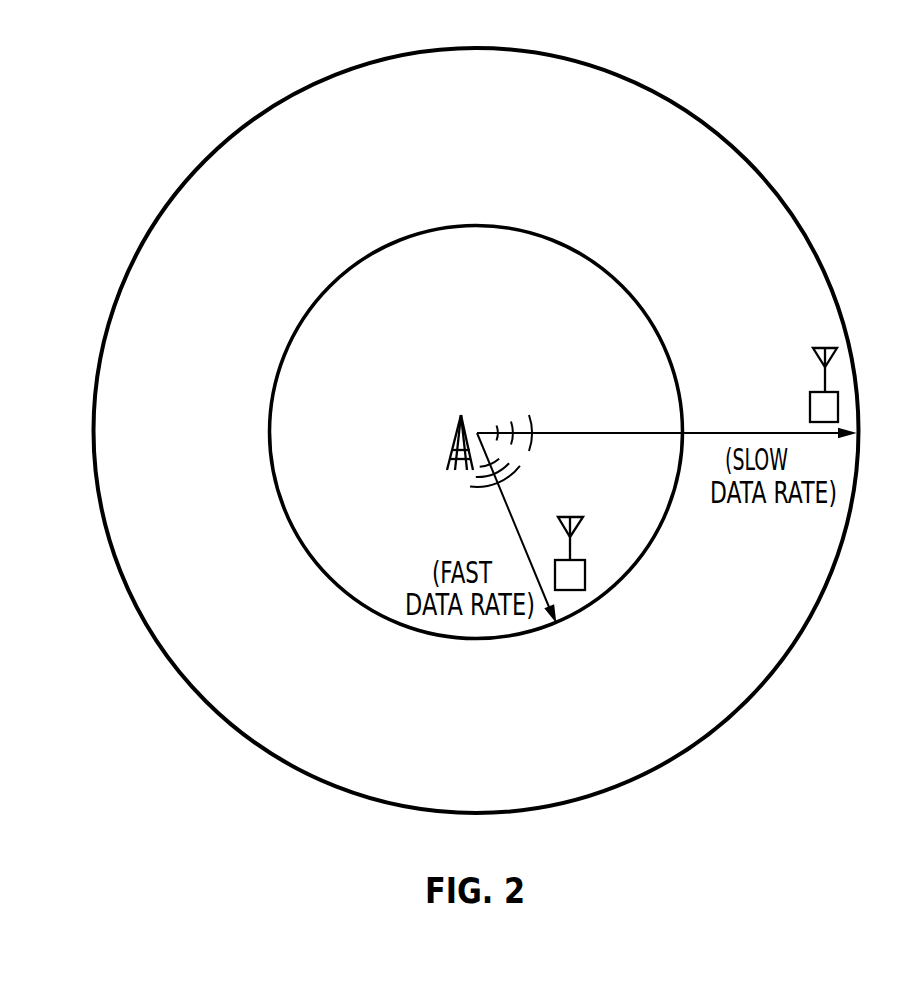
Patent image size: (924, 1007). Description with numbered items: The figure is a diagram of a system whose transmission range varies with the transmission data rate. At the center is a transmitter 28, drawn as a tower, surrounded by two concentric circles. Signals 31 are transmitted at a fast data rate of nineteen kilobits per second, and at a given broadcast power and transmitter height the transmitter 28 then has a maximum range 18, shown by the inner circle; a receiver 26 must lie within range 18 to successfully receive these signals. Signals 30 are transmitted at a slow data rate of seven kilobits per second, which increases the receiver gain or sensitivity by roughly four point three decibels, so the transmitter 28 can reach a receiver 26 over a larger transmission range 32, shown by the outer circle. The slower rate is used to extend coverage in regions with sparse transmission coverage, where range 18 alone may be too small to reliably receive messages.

The maximum range 18 is at (270, 416).
The receiver 26 is at (585, 577).
The transmitter 28 is at (448, 443).
The signals 30 is at (536, 398).
The signals 31 is at (468, 487).
The larger transmission range 32 is at (822, 263).